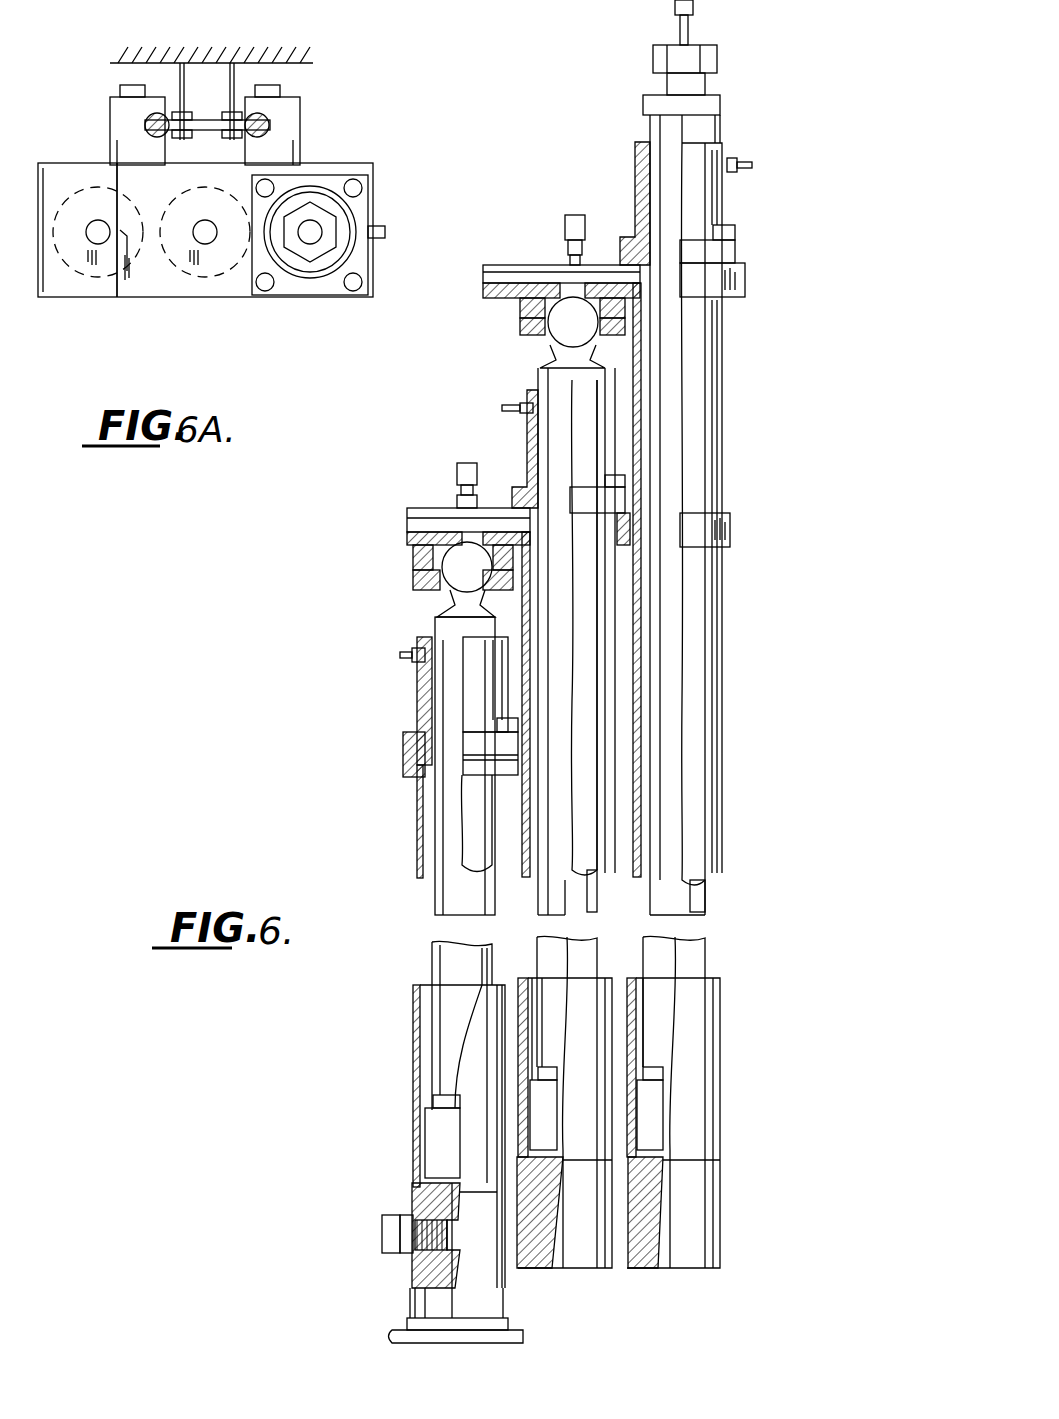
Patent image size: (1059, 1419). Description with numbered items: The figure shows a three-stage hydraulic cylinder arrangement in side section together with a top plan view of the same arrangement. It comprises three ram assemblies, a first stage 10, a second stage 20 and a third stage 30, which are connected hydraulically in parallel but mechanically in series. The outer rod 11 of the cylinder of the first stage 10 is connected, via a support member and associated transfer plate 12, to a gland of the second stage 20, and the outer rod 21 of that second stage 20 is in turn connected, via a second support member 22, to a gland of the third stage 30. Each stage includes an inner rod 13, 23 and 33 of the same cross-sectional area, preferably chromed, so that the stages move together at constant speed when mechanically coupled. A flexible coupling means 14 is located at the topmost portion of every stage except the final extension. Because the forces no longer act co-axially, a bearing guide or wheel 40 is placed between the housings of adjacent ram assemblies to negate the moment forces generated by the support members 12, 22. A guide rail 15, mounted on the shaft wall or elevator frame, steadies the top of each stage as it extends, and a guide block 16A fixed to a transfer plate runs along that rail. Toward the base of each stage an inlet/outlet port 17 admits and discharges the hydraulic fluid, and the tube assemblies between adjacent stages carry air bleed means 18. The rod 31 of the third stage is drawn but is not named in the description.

In FIG. 6A, the first stage ram assembly 10 is at (94, 278).
In FIG. 6, the first stage ram assembly 10 is at (400, 1047).
In FIG. 6, the outer rod 11 is at (413, 1007).
In FIG. 6A, the transfer plate 12 is at (62, 290).
In FIG. 6, the transfer plate 12 is at (405, 540).
In FIG. 6, the inner rod 13 is at (450, 812).
In FIG. 6, the flexible coupling means 14 is at (545, 335).
In FIG. 6A, the guide rail 15 is at (257, 112).
In FIG. 6A, the guide block 16A is at (125, 135).
In FIG. 6, the inlet/outlet port 17 is at (382, 1220).
In FIG. 6A, the air bleed means 18 is at (110, 232).
In FIG. 6, the air bleed means 18 is at (580, 215).
In FIG. 6A, the second stage ram assembly 20 is at (203, 278).
In FIG. 6, the second stage ram assembly 20 is at (597, 833).
In FIG. 6, the outer rod 21 is at (580, 892).
In FIG. 6A, the second support member 22 is at (238, 280).
In FIG. 6, the second support member 22 is at (497, 298).
In FIG. 6, the inner rod 23 is at (555, 710).
In FIG. 6A, the third stage ram assembly 30 is at (310, 285).
In FIG. 6, the third stage ram assembly 30 is at (722, 620).
In FIG. 6, the cylinder rod 31 is at (700, 685).
In FIG. 6A, the inner rod 33 is at (333, 295).
In FIG. 6, the inner rod 33 is at (668, 393).
In FIG. 6, the bearing guide or wheel 40 is at (540, 1225).